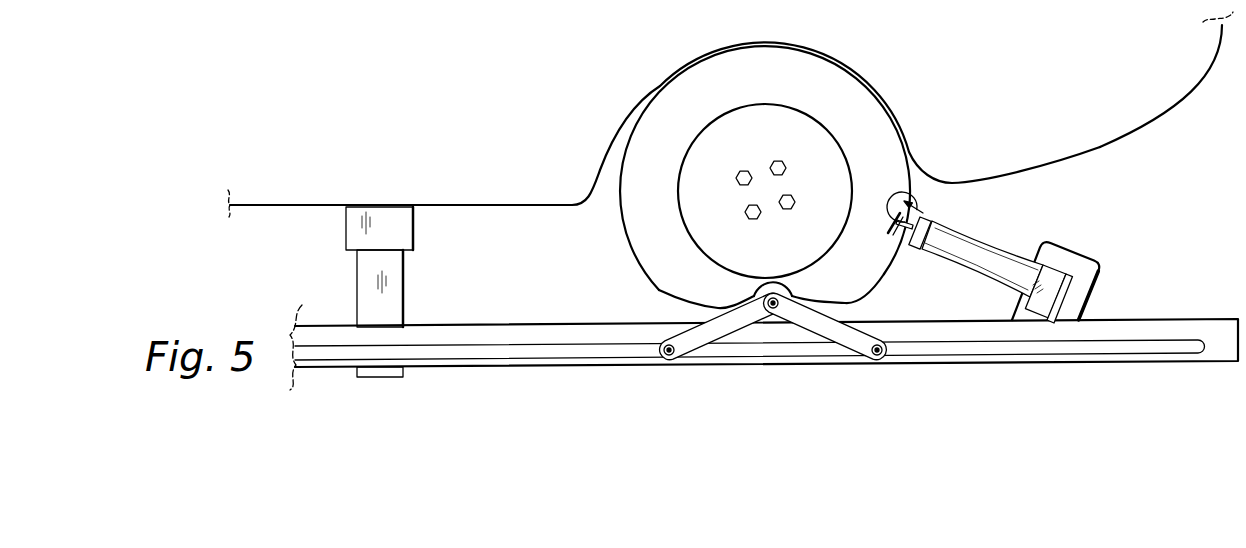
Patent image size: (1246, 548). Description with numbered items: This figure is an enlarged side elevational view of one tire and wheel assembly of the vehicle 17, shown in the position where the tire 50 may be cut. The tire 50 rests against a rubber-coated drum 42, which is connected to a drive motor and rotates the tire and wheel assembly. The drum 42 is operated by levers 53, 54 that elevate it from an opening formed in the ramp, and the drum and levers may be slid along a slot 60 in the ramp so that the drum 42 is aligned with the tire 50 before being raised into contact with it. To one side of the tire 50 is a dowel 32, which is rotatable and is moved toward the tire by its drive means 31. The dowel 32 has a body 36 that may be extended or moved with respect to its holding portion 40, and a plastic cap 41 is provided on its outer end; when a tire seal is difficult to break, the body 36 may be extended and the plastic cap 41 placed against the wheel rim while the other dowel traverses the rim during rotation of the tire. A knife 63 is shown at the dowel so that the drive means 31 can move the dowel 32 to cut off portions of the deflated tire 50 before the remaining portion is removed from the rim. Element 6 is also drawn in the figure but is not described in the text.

The mounting bracket 6 is at (405, 230).
The vehicle 17 is at (1150, 98).
The drive means 31 is at (1087, 273).
The dowel 32 is at (1021, 307).
The body 36 is at (947, 248).
The holding portion 40 is at (1043, 303).
The plastic cap 41 is at (930, 219).
The drum 42 is at (752, 291).
The tire 50 is at (647, 237).
The lever 53 is at (689, 345).
The lever 54 is at (862, 340).
The slot 60 is at (472, 352).
The knife 63 is at (908, 192).